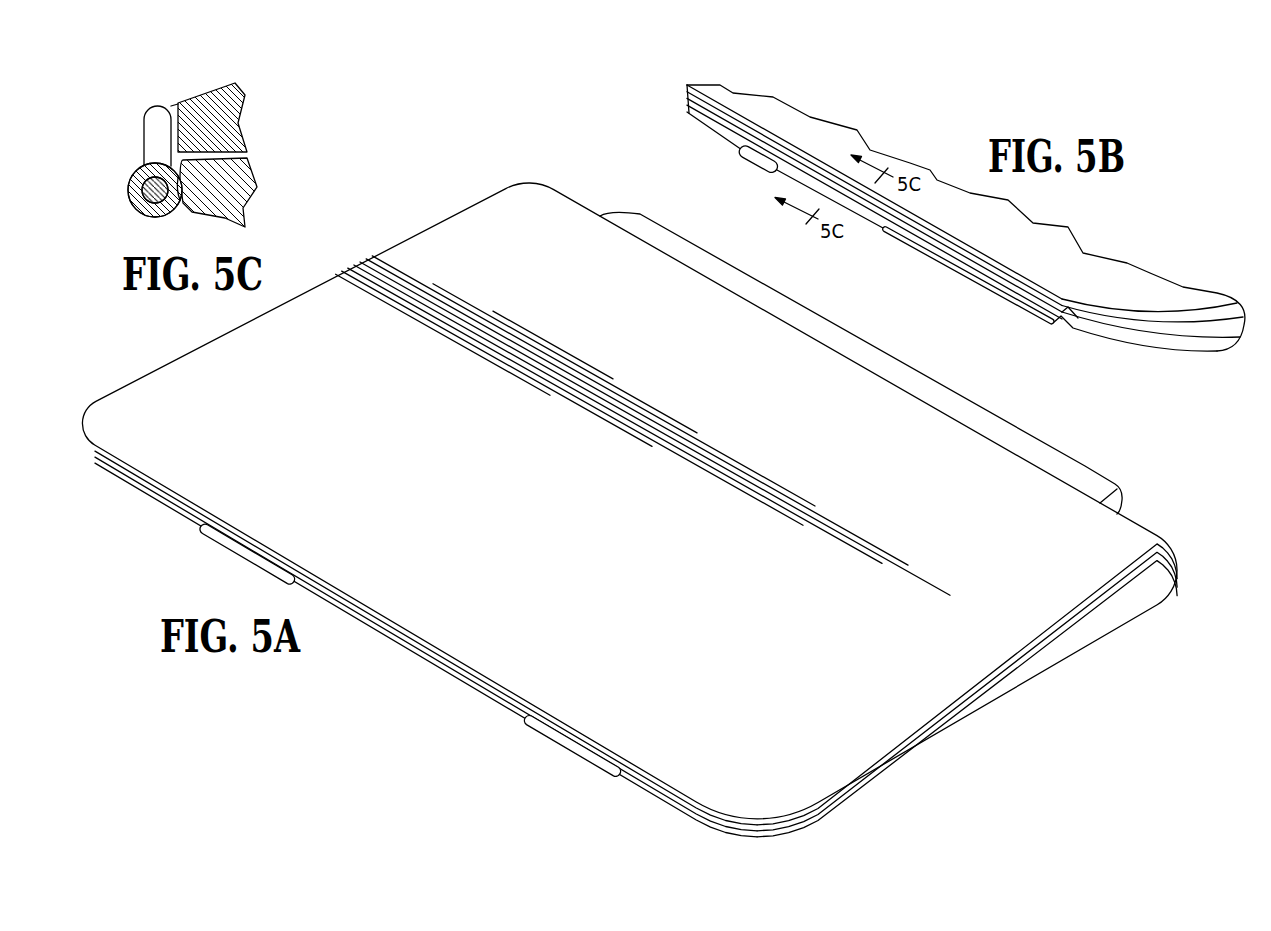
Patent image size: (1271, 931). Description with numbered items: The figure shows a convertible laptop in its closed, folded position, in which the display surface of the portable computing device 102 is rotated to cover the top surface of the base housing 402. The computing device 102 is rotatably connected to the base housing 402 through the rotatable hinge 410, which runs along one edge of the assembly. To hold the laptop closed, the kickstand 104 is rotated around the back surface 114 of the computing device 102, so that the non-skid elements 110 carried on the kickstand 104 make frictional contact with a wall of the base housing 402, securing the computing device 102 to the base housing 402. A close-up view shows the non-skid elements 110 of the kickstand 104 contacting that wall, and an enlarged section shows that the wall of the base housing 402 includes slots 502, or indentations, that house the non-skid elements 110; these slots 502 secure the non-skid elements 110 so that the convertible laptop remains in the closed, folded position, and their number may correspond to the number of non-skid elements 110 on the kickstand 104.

In FIG. 5A, the portable computing device 102 is at (424, 219).
In FIG. 5B, the portable computing device 102 is at (1155, 266).
In FIG. 5C, the portable computing device 102 is at (246, 117).
In FIG. 5A, the kickstand 104 is at (397, 657).
In FIG. 5B, the kickstand 104 is at (957, 286).
In FIG. 5C, the kickstand 104 is at (134, 129).
In FIG. 5A, the non-skid elements 110 is at (240, 556).
In FIG. 5B, the non-skid elements 110 is at (766, 168).
In FIG. 5C, the non-skid elements 110 is at (144, 215).
In FIG. 5A, the back surface 114 is at (668, 512).
In FIG. 5A, the base housing 402 is at (979, 732).
In FIG. 5B, the base housing 402 is at (1089, 347).
In FIG. 5C, the base housing 402 is at (258, 174).
In FIG. 5A, the rotatable hinge 410 is at (1087, 467).
In FIG. 5C, the slots 502 is at (180, 212).